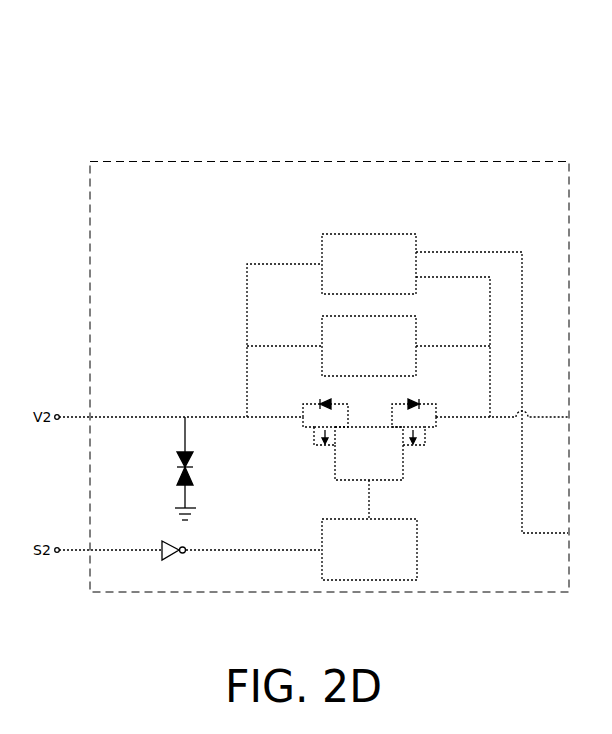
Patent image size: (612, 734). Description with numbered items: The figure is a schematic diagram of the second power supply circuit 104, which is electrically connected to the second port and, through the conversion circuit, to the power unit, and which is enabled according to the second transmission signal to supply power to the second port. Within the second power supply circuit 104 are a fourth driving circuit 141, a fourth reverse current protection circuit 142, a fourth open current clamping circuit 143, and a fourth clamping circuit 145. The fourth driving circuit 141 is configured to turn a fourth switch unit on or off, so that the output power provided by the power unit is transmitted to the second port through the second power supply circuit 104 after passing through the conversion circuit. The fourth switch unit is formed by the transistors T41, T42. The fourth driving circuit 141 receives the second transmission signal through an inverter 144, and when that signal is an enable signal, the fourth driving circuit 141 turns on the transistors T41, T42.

The second power supply circuit 104 is at (558, 85).
The fourth driving circuit 141 is at (381, 557).
The fourth reverse current protection circuit 142 is at (381, 354).
The fourth open current clamping circuit 143 is at (381, 273).
The inverter 144 is at (176, 560).
The fourth clamping circuit 145 is at (196, 463).
The transistor T41 is at (317, 423).
The transistor T42 is at (422, 423).